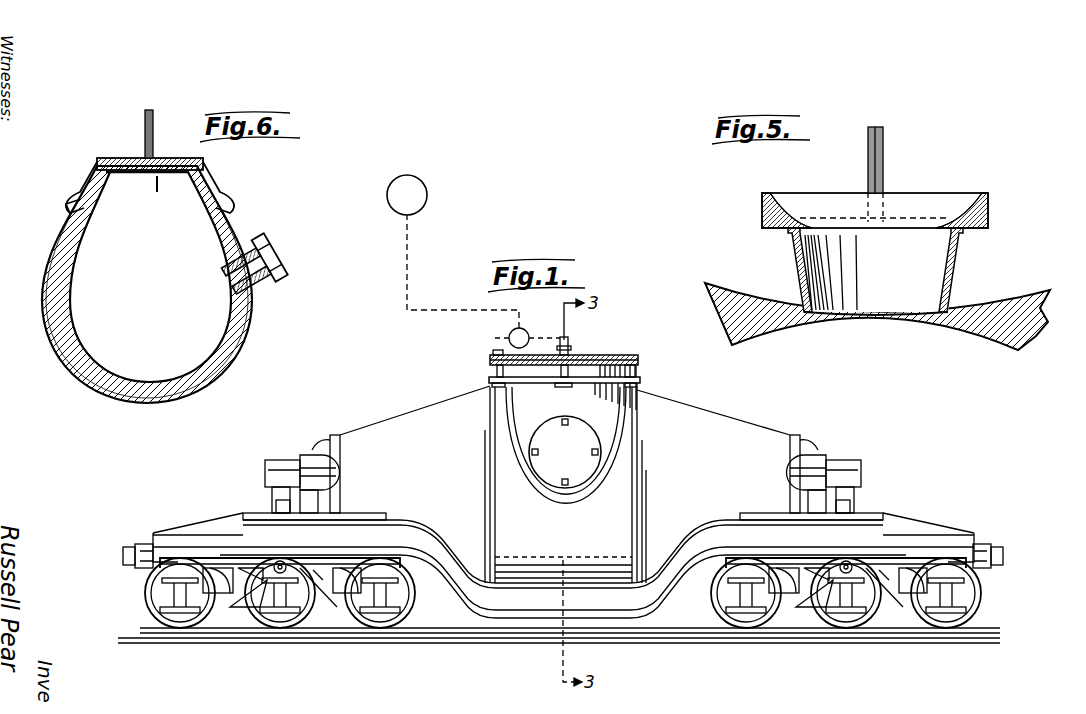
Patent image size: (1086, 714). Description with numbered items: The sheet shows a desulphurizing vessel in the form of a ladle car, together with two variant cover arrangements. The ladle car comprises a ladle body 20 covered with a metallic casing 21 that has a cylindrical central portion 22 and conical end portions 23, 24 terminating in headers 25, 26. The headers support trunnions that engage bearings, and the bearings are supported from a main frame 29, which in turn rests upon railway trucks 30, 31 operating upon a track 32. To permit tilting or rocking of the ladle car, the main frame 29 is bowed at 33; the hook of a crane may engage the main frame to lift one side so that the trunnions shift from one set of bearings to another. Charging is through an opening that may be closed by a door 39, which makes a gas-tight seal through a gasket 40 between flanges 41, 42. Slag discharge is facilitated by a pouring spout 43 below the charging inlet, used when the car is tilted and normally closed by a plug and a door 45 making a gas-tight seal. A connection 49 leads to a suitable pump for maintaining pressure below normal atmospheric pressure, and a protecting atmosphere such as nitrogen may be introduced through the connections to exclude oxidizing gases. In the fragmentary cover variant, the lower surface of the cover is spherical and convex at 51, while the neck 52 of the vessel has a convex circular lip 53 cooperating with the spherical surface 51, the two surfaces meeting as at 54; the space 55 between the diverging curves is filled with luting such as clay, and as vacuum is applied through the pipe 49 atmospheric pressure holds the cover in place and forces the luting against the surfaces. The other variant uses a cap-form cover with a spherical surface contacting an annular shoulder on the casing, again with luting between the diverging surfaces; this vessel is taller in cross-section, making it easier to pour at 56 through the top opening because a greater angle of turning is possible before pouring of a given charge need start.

In FIG. 1, the ladle body 20 is at (532, 577).
In FIG. 1, the metallic casing 21 is at (576, 479).
In FIG. 1, the cylindrical central portion 22 is at (568, 556).
In FIG. 1, the conical end portion 23 is at (408, 428).
In FIG. 1, the conical end portion 24 is at (705, 432).
In FIG. 1, the header 25 is at (334, 437).
In FIG. 1, the header 26 is at (797, 442).
In FIG. 1, the main frame 29 is at (370, 540).
In FIG. 1, the railway truck 30 is at (274, 580).
In FIG. 1, the railway truck 31 is at (890, 598).
In FIG. 1, the track 32 is at (703, 643).
In FIG. 1, the bow of main frame 33 is at (445, 590).
In FIG. 1, the door 39 is at (613, 355).
In FIG. 1, the gasket 40 is at (640, 361).
In FIG. 1, the flange 41 is at (511, 338).
In FIG. 1, the flange 42 is at (490, 372).
In FIG. 6, the pouring spout 43 is at (268, 284).
In FIG. 1, the pouring spout 43 is at (580, 468).
In FIG. 6, the door 45 is at (282, 250).
In FIG. 1, the door 45 is at (546, 468).
In FIG. 6, the connection 49 is at (153, 122).
In FIG. 5, the connection 49 is at (883, 162).
In FIG. 1, the connection 49 is at (570, 344).
In FIG. 5, the spherical surface 51 is at (983, 193).
In FIG. 5, the neck 52 is at (812, 288).
In FIG. 5, the convex circular lip 53 is at (775, 228).
In FIG. 5, the meeting point 54 is at (800, 222).
In FIG. 5, the space 55 is at (762, 207).
In FIG. 6, the top opening 56 is at (157, 192).